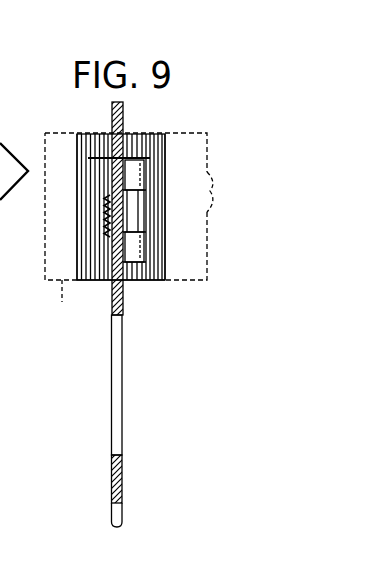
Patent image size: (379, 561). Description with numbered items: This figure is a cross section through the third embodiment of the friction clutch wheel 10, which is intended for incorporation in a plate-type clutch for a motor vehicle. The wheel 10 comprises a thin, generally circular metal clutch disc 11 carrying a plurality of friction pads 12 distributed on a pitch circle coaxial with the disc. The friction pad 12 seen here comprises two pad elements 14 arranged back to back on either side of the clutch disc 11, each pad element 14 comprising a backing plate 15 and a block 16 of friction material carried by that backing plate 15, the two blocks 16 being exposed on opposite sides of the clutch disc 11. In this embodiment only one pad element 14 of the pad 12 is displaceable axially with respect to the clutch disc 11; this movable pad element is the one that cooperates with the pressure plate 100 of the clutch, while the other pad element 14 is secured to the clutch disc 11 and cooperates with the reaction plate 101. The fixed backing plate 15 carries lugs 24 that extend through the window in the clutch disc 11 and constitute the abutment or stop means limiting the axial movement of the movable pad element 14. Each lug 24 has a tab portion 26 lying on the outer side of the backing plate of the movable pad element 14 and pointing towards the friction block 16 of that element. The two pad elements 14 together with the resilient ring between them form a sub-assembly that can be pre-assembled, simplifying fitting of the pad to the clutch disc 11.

The friction clutch wheel 10 is at (60, 165).
The clutch disc 11 is at (131, 425).
The friction pad 12 is at (69, 235).
The pad element 14 is at (140, 286).
The backing plate 15 is at (114, 132).
The friction material block 16 is at (152, 160).
The lug 24 is at (140, 224).
The tab portion 26 is at (150, 170).
The pressure plate 100 is at (173, 283).
The reaction plate 101 is at (61, 304).